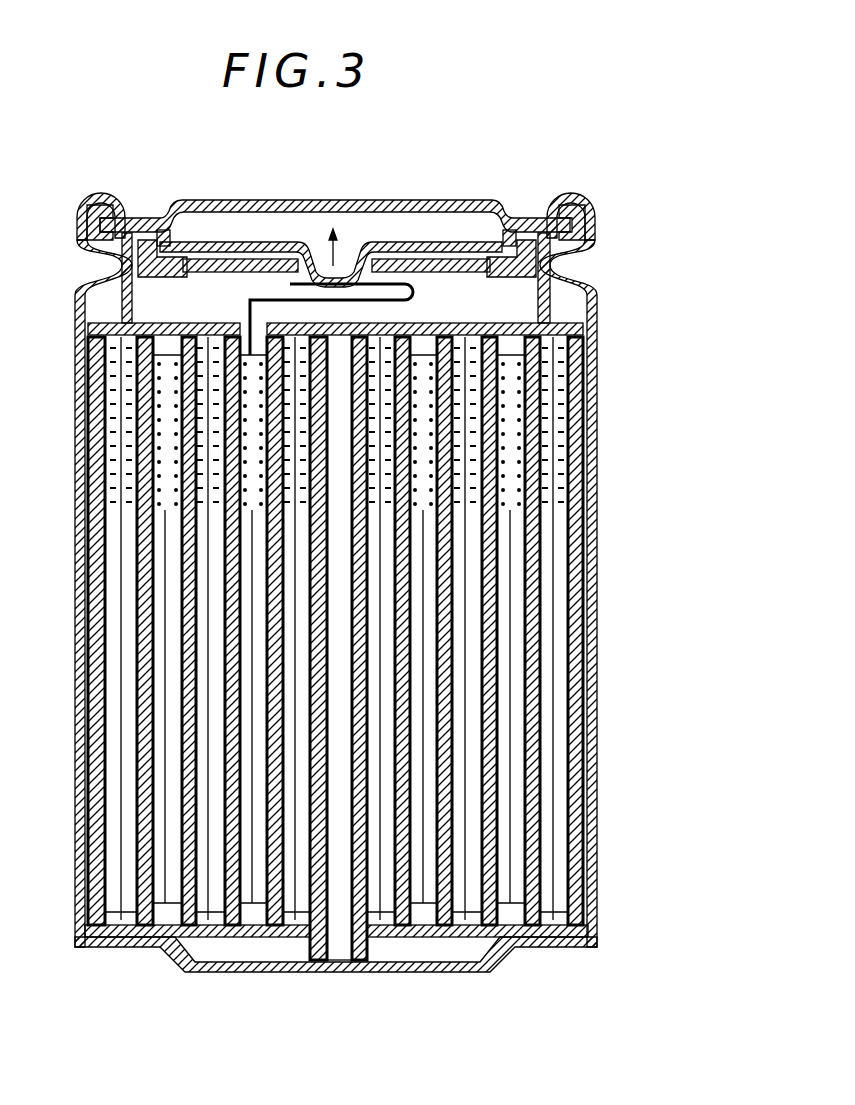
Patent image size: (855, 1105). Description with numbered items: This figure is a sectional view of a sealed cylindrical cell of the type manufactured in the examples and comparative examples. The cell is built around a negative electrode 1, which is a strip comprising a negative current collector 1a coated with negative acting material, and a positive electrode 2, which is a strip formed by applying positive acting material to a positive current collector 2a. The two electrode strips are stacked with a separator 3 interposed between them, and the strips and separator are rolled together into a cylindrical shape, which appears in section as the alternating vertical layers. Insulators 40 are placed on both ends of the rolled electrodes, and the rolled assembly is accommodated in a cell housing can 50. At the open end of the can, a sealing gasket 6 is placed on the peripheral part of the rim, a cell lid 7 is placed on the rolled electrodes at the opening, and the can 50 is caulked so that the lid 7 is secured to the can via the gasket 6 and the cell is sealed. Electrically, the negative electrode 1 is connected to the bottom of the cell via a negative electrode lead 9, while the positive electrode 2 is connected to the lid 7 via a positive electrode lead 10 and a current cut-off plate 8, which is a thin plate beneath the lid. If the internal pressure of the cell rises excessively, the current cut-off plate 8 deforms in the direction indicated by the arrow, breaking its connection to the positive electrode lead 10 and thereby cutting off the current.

The negative electrode 1 is at (112, 708).
The negative current collector 1a is at (120, 770).
The positive electrode 2 is at (153, 550).
The positive current collector 2a is at (163, 605).
The separator 3 is at (142, 468).
The sealing gasket 6 is at (80, 213).
The cell lid 7 is at (325, 200).
The current cut-off plate 8 is at (366, 243).
The negative electrode lead 9 is at (178, 963).
The positive electrode lead 10 is at (410, 285).
The insulator 40 is at (463, 322).
The cell housing can 50 is at (78, 342).